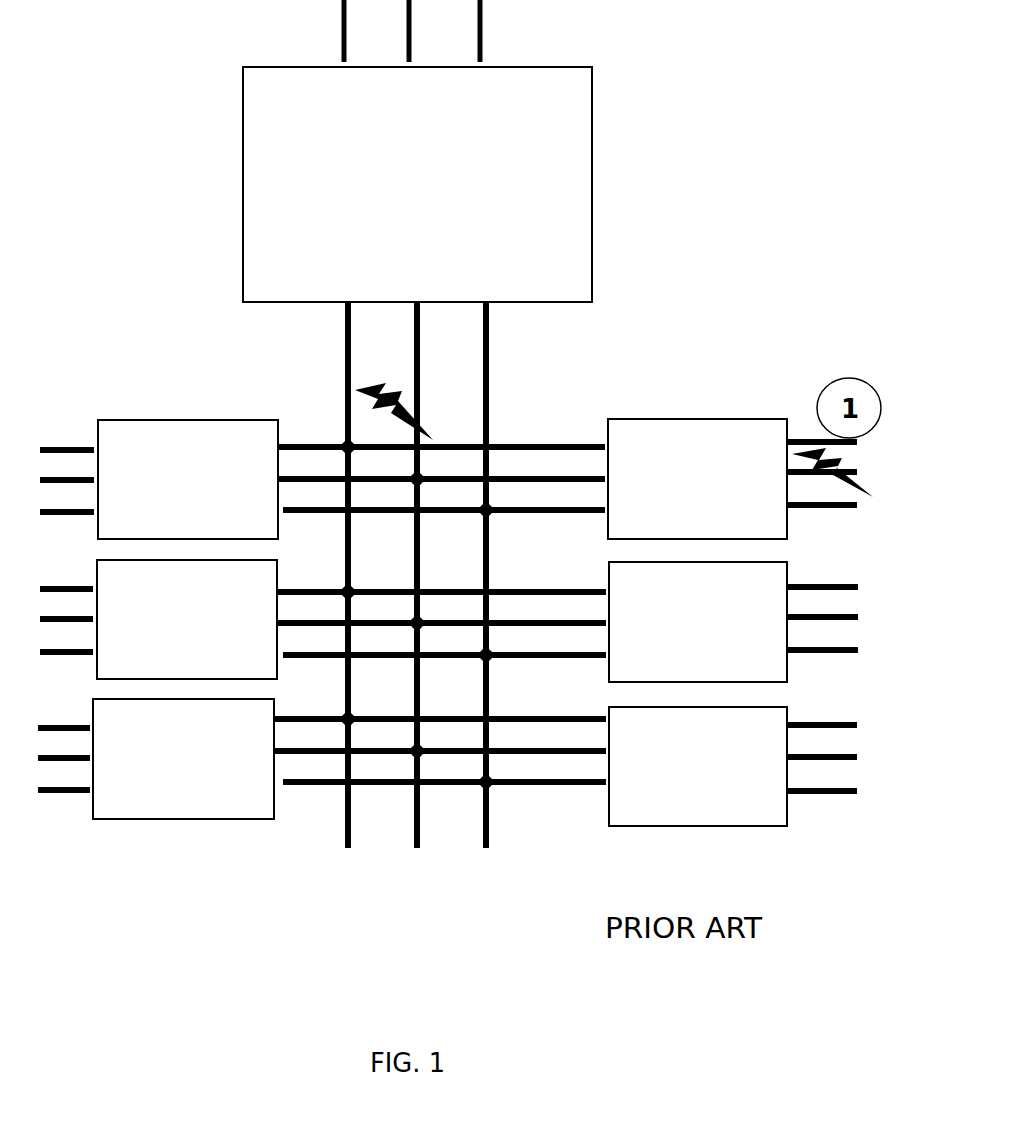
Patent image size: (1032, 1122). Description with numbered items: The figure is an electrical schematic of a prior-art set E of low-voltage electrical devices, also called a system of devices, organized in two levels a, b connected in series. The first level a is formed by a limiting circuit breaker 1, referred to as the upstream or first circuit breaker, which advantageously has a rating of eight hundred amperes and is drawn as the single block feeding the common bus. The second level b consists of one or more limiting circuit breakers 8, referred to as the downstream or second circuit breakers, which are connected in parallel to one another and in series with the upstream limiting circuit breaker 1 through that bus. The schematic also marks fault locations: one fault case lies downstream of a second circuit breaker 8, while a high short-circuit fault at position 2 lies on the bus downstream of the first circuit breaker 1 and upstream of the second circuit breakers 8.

The limiting circuit breaker 1 is at (592, 175).
The second circuit breakers 8 is at (195, 418).
The fault position 2 is at (429, 432).
The level a is at (185, 151).
The level b is at (824, 685).
The set of low-voltage electrical devices E is at (748, 238).